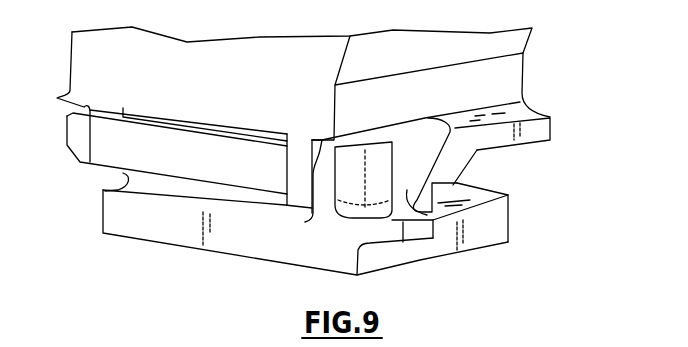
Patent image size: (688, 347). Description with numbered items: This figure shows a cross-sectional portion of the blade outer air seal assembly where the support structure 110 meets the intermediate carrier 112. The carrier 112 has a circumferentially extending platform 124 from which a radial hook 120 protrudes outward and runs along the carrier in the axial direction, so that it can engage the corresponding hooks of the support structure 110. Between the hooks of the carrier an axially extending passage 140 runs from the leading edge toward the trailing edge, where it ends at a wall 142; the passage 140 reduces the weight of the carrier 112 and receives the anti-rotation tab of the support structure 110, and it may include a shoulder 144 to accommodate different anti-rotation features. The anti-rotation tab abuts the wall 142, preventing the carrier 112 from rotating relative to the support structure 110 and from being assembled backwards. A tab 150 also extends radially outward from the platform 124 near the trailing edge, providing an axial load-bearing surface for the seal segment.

The support structure 110 is at (520, 42).
The intermediate carrier 112 is at (510, 210).
The hook 120 is at (423, 155).
The platform 124 is at (490, 233).
The axially extending passage 140 is at (173, 190).
The wall 142 is at (322, 182).
The shoulder 144 is at (90, 163).
The tab 150 is at (410, 233).